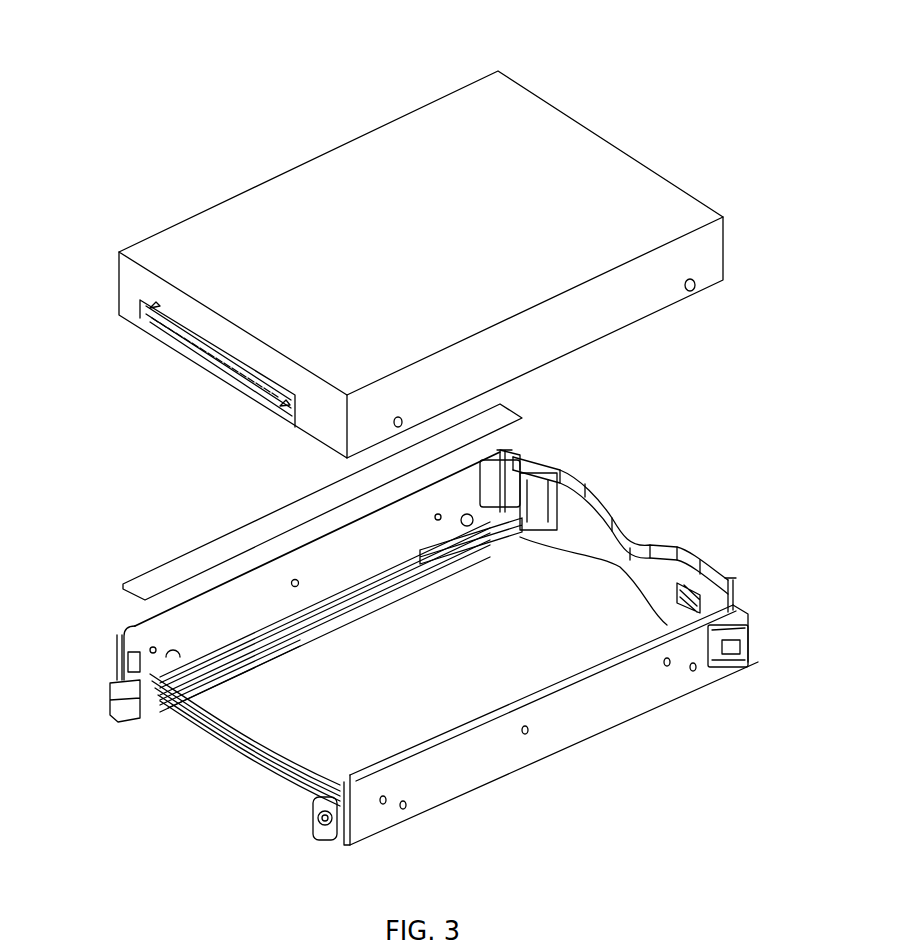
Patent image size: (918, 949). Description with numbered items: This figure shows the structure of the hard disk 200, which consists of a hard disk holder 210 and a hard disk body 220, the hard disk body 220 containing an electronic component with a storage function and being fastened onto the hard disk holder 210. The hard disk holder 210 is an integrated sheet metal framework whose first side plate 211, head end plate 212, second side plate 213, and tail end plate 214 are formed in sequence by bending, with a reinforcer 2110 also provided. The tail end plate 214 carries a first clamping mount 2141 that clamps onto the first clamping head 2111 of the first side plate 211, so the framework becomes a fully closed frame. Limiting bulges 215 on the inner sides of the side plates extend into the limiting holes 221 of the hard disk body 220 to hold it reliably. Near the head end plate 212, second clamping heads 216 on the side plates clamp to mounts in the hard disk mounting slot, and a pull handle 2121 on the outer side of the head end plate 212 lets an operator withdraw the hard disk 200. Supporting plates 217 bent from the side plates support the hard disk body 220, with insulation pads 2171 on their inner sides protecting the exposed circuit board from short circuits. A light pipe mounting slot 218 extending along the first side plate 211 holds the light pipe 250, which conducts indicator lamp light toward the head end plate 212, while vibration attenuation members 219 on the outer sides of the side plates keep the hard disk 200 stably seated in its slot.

The hard disk 200 is at (148, 55).
The hard disk body 220 is at (455, 264).
The limiting hole 221 is at (692, 291).
The hard disk holder 210 is at (423, 666).
The first side plate 211 is at (190, 622).
The first clamping head 2111 is at (118, 648).
The reinforcer 2110 is at (323, 833).
The head end plate 212 is at (646, 531).
The pull handle 2121 is at (675, 543).
The second side plate 213 is at (608, 698).
The tail end plate 214 is at (233, 747).
The first clamping mount 2141 is at (115, 681).
The limiting bulge 215 is at (470, 527).
The second clamping head 216 is at (748, 650).
The supporting plate 217 is at (430, 587).
The insulation pad 2171 is at (248, 543).
The light pipe mounting slot 218 is at (343, 630).
The vibration attenuation member 219 is at (385, 805).
The light pipe 250 is at (237, 657).